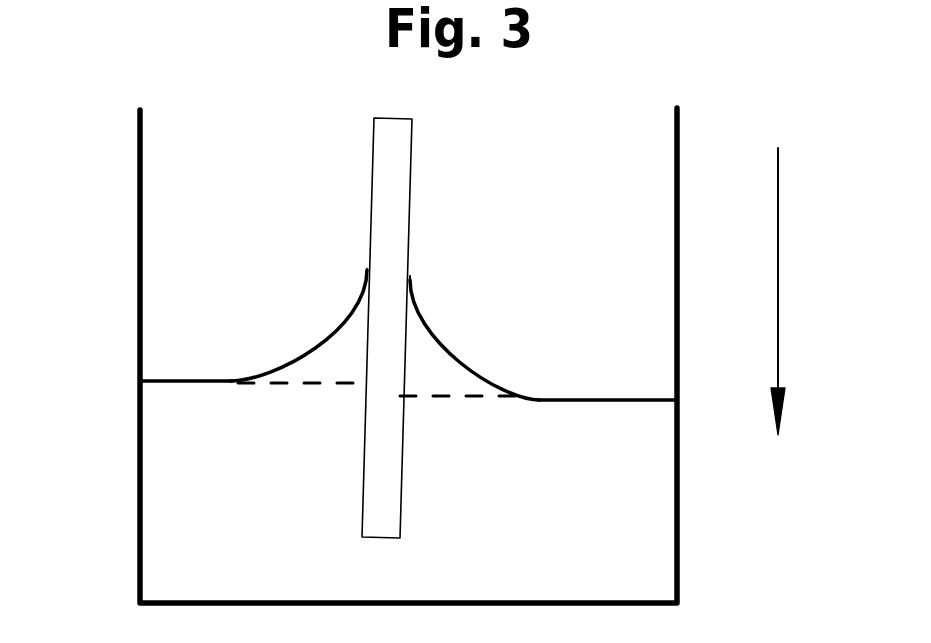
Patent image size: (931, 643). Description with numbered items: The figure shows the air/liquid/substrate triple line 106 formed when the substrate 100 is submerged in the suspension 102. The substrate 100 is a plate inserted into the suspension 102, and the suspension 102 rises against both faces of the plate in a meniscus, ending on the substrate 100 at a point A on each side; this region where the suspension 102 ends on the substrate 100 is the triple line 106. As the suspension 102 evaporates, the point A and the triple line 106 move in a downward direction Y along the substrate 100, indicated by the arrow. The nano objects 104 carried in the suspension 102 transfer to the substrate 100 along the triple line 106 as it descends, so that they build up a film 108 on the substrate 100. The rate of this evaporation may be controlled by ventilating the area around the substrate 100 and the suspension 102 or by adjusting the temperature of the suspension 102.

The substrate 100 is at (405, 145).
The suspension 102 is at (267, 542).
The nano objects 104 is at (408, 355).
The triple line 106 is at (411, 280).
The film 108 is at (303, 355).
The point A is at (367, 268).
The downward direction Y is at (777, 307).